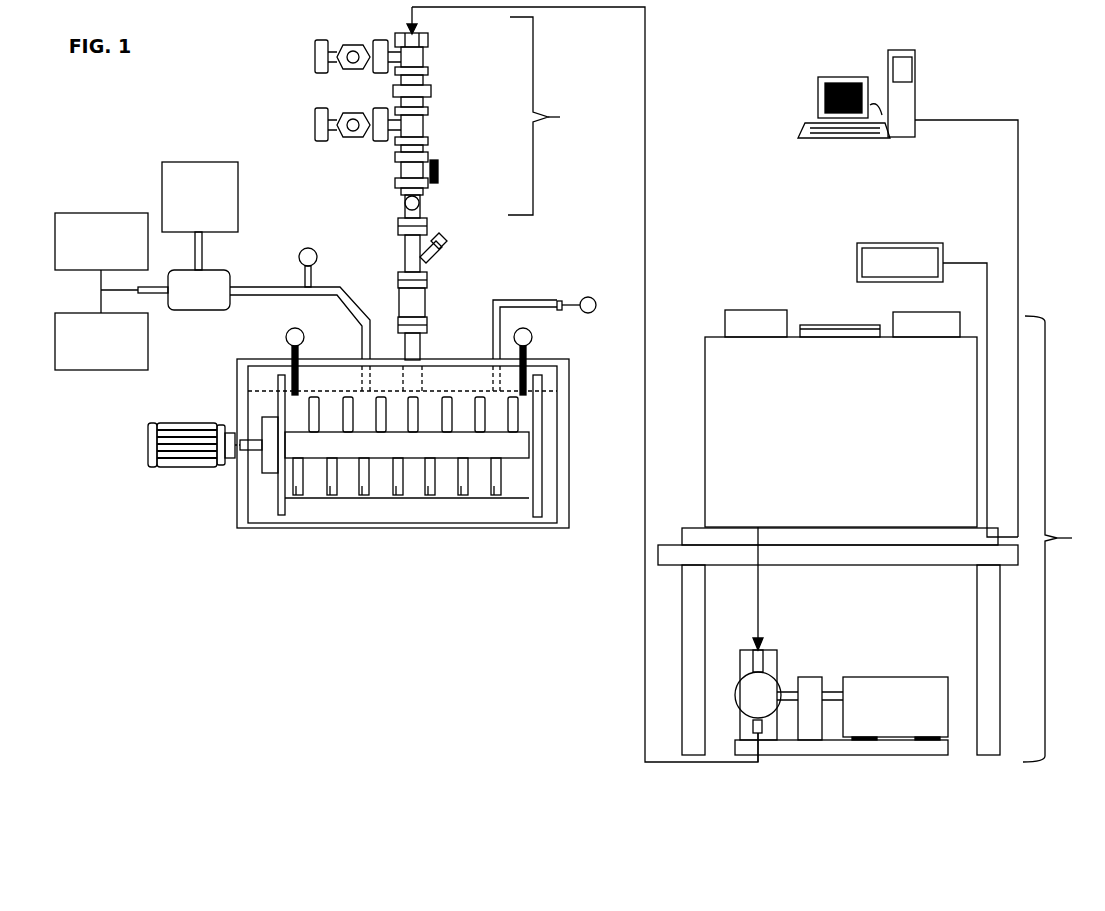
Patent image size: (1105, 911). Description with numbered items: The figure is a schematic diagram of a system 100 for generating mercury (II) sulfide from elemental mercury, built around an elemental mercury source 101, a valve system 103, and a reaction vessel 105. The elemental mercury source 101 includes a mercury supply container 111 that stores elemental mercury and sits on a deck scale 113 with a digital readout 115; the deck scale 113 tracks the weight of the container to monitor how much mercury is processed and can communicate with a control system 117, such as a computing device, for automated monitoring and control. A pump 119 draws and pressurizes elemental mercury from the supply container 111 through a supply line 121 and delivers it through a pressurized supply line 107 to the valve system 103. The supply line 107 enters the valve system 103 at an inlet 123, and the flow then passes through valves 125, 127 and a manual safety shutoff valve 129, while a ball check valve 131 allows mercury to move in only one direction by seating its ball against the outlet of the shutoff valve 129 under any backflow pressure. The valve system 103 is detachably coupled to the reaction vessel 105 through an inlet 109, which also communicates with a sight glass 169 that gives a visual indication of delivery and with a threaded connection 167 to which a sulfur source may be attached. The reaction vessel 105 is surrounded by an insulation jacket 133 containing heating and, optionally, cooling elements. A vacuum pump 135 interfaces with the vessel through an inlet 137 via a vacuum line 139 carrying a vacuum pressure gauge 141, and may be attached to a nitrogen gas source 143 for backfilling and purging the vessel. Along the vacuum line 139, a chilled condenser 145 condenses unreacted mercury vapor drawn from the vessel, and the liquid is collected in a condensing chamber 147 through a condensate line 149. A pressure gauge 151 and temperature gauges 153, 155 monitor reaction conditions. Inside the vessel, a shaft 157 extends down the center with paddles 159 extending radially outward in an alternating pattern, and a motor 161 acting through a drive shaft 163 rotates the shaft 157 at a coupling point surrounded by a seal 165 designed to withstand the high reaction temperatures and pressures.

The system 100 is at (1042, 66).
The elemental mercury source 101 is at (1062, 539).
The valve system 103 is at (555, 116).
The reaction vessel 105 is at (273, 510).
The supply line 107 is at (645, 207).
The inlet 109 is at (420, 353).
The mercury supply container 111 is at (717, 335).
The deck scale 113 is at (693, 527).
The digital readout 115 is at (857, 262).
The control system 117 is at (877, 293).
The pump 119 is at (895, 677).
The supply line 121 is at (760, 603).
The inlet 123 is at (428, 36).
The valve 125 is at (314, 56).
The valve 127 is at (314, 126).
The shutoff valve 129 is at (437, 160).
The ball check valve 131 is at (420, 203).
The insulation jacket 133 is at (242, 393).
The vacuum pump 135 is at (91, 213).
The inlet 137 is at (362, 350).
The vacuum line 139 is at (267, 284).
The vacuum pressure gauge 141 is at (312, 246).
The nitrogen gas source 143 is at (90, 370).
The chilled condenser 145 is at (198, 312).
The condensing chamber 147 is at (200, 162).
The condensate line 149 is at (203, 256).
The pressure gauge 151 is at (586, 297).
The temperature gauge 153 is at (286, 336).
The temperature gauge 155 is at (534, 334).
The shaft 157 is at (520, 448).
The paddles 159 is at (513, 545).
The motor 161 is at (148, 457).
The drive shaft 163 is at (262, 440).
The seal 165 is at (273, 477).
The threaded connection 167 is at (447, 240).
The sight glass 169 is at (427, 300).